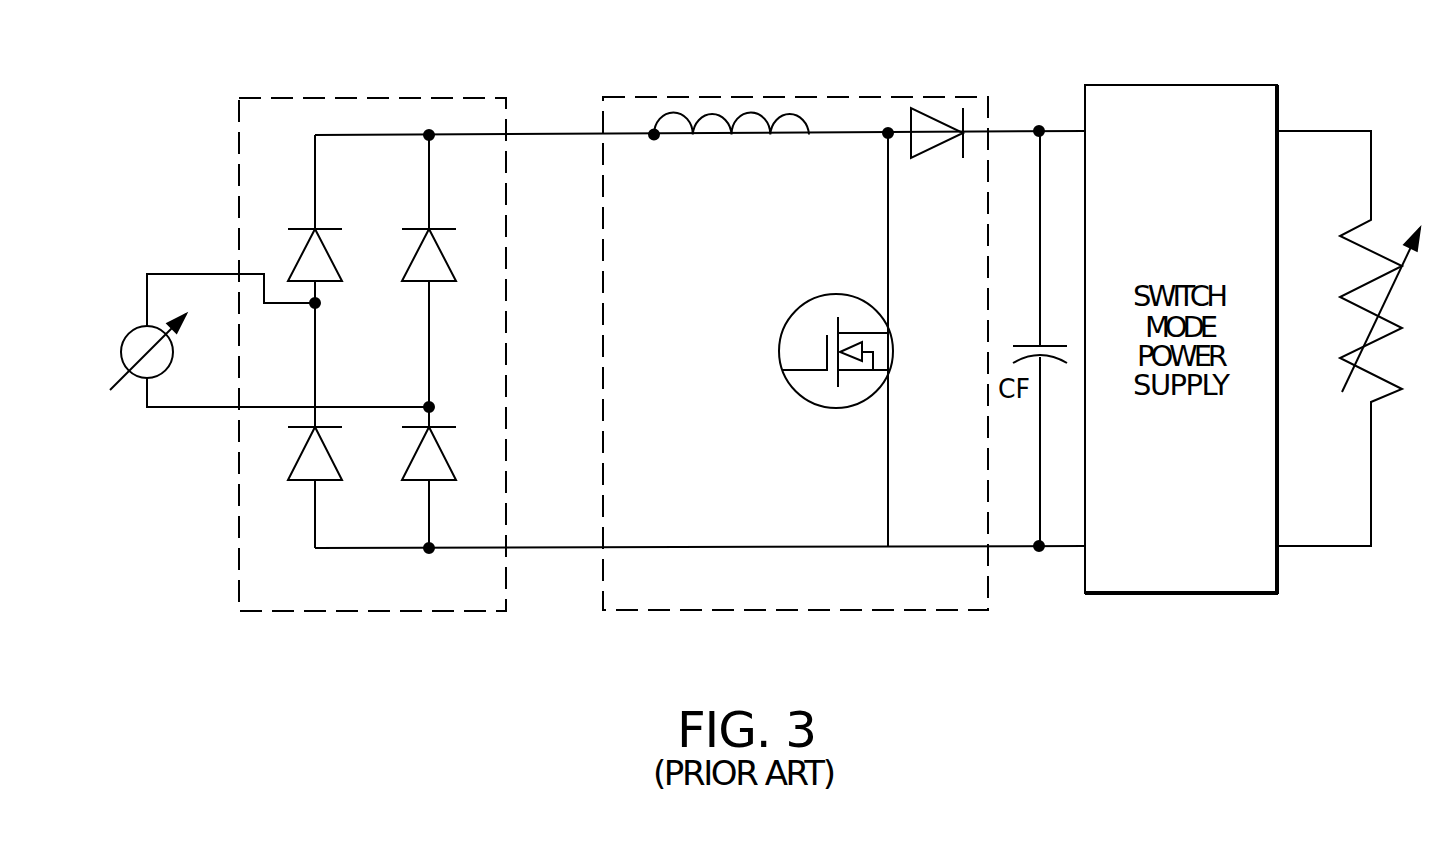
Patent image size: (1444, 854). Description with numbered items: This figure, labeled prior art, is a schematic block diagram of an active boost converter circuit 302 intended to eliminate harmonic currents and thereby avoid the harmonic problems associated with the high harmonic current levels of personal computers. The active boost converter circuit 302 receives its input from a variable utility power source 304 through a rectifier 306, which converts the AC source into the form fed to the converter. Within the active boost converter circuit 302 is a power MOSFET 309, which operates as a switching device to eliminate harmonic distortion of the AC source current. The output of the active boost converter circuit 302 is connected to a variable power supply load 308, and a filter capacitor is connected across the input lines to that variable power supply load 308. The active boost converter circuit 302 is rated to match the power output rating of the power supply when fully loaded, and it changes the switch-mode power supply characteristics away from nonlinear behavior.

The active boost converter circuit 302 is at (795, 317).
The variable utility power source 304 is at (129, 334).
The rectifier 306 is at (346, 97).
The variable power supply load 308 is at (1340, 297).
The power MOSFET 309 is at (797, 310).